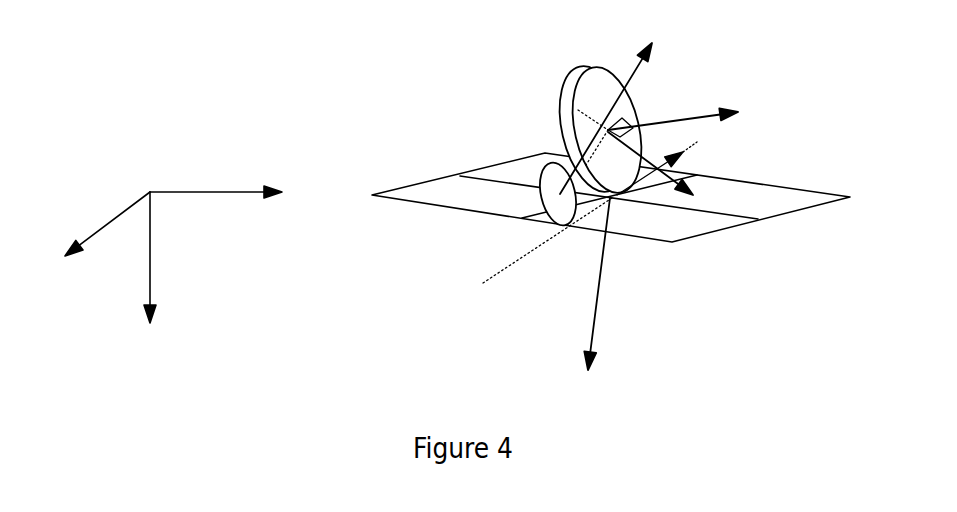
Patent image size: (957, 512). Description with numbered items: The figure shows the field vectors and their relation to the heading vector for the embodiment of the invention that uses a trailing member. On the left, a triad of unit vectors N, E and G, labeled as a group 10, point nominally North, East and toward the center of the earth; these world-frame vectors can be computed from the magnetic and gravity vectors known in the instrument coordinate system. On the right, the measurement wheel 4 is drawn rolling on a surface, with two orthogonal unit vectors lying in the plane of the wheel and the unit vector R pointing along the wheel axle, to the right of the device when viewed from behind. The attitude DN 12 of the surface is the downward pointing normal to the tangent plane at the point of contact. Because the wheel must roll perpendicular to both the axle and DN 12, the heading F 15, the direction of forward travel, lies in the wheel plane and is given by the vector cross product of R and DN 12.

The coordinate axes (north, east, gravity) 10 is at (135, 193).
The measurement wheel 4 is at (563, 127).
The unit vector F (heading) 15 is at (688, 153).
The attitude DN of the surface 12 is at (603, 327).